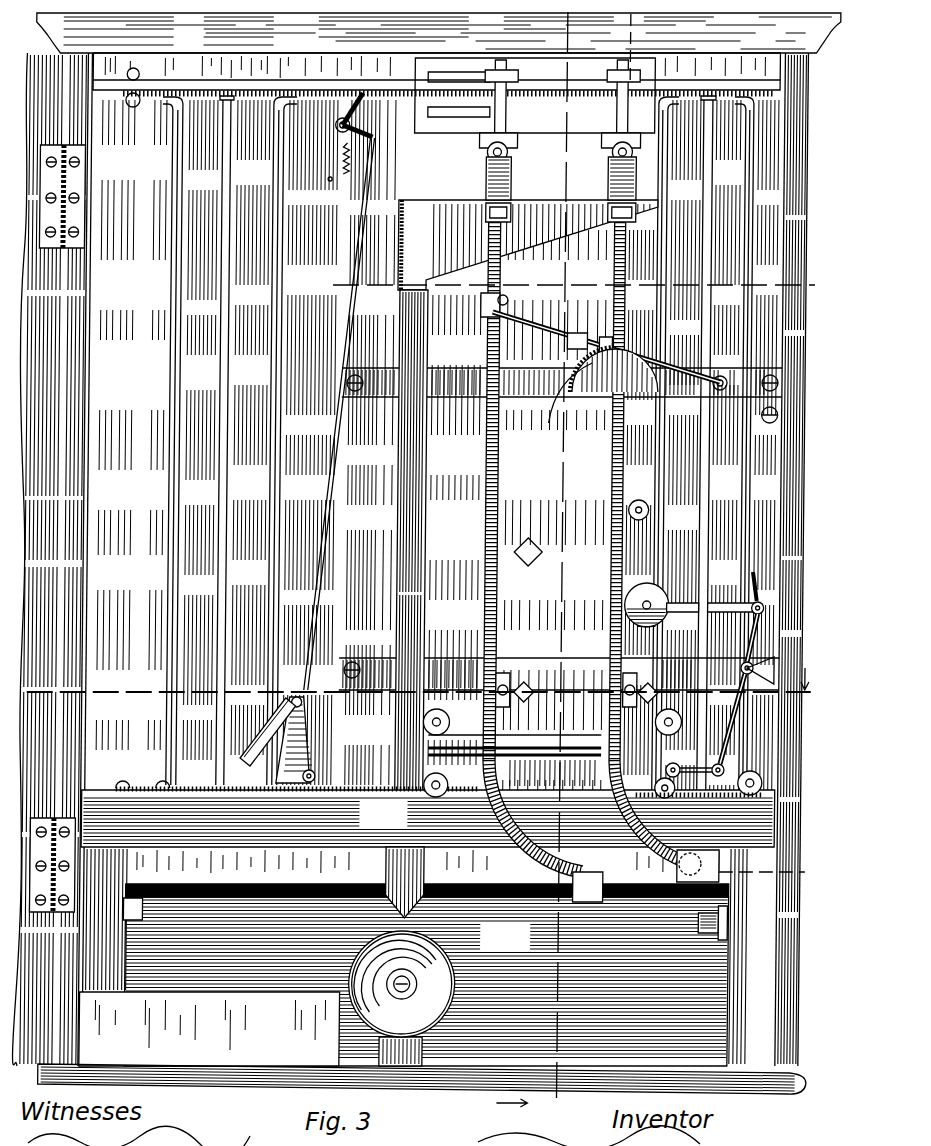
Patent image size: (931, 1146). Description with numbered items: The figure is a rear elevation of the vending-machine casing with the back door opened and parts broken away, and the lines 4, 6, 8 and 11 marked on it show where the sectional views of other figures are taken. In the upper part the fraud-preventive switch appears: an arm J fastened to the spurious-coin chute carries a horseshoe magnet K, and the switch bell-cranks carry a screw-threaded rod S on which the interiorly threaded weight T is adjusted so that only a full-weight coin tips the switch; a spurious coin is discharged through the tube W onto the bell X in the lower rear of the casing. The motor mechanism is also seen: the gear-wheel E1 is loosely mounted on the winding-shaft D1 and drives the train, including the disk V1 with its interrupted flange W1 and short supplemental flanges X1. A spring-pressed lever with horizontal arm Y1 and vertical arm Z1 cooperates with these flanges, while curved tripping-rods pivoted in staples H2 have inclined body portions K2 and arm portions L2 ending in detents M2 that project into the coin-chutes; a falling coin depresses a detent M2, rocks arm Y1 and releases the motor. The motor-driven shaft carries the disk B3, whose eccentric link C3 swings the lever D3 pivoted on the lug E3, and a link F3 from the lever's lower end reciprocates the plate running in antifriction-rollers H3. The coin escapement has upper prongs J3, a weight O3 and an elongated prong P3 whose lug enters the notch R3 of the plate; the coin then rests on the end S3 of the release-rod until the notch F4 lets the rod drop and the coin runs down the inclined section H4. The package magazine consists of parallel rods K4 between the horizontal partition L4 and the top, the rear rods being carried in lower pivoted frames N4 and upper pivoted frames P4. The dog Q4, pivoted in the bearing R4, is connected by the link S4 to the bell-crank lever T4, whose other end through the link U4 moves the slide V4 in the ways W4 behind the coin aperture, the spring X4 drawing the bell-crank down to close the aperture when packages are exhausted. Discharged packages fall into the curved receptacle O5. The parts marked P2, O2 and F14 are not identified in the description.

The lower pivoted frame N4 is at (437, 80).
The link U4 is at (374, 82).
The magnet K is at (514, 72).
The arm J is at (512, 110).
The gear-wheel E1 is at (562, 331).
The bell-crank lever T4 is at (438, 752).
The upper pivoted frame P4 is at (228, 132).
The spring X4 is at (327, 159).
The ways W4 is at (437, 117).
The slide V4 is at (461, 113).
The screw-threaded rod S is at (512, 142).
The weight T is at (589, 180).
The parallel rods K4 is at (283, 221).
The link S4 is at (360, 245).
The tube W is at (397, 333).
The detent M2 is at (478, 302).
The arm portion of tripping-rod L2 is at (480, 318).
The body portion of tripping-rod K2 is at (553, 333).
The staples H2 is at (588, 325).
The horizontal arm Y1 is at (576, 345).
The disk V1 is at (554, 397).
The flange W1 is at (607, 394).
The supplemental flanges X1 is at (667, 552).
The vertical arm Z1 is at (735, 386).
The panel P2 is at (517, 510).
The winding-shaft D1 is at (643, 505).
The upright strip O2 is at (368, 442).
The link C3 is at (611, 647).
The disk B3 is at (632, 603).
The lever D3 is at (762, 613).
The lug E3 is at (776, 660).
The upper prongs J3 is at (506, 678).
The antifriction-rollers H3 is at (440, 708).
The weight O3 is at (586, 681).
The dog Q4 is at (258, 722).
The notch R3 is at (514, 714).
The bearing R4 is at (304, 740).
The elongated prong P3 is at (515, 747).
The link F3 is at (714, 768).
The plate F14 is at (440, 770).
The horizontal partition L4 is at (428, 818).
The end of rod S3 is at (468, 523).
The notch F4 is at (548, 774).
The inclined section of coin-chute H4 is at (543, 831).
The curved receptacle O5 is at (426, 975).
The bell X is at (401, 998).
The section line 8 8 is at (571, 290).
The section line 6 6 is at (535, 565).
The section line 11 11 is at (730, 448).
The section line 4 4 is at (425, 692).